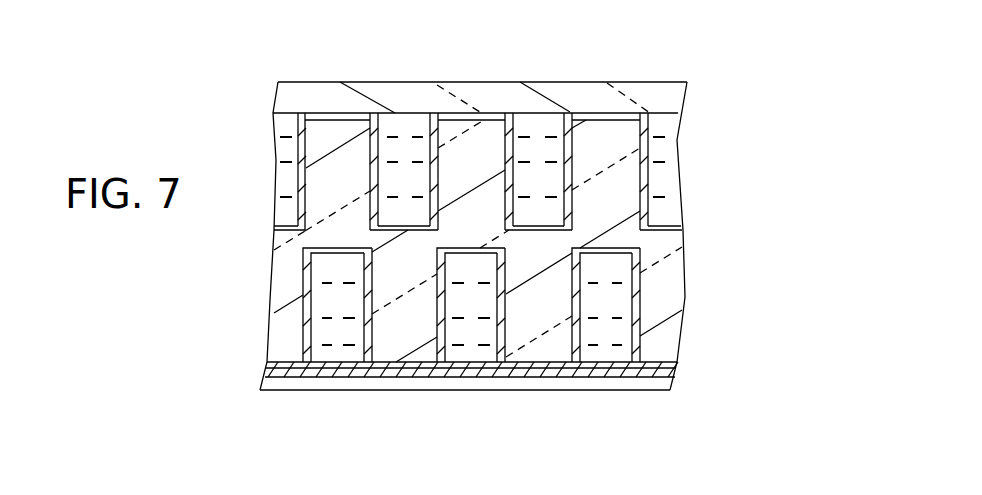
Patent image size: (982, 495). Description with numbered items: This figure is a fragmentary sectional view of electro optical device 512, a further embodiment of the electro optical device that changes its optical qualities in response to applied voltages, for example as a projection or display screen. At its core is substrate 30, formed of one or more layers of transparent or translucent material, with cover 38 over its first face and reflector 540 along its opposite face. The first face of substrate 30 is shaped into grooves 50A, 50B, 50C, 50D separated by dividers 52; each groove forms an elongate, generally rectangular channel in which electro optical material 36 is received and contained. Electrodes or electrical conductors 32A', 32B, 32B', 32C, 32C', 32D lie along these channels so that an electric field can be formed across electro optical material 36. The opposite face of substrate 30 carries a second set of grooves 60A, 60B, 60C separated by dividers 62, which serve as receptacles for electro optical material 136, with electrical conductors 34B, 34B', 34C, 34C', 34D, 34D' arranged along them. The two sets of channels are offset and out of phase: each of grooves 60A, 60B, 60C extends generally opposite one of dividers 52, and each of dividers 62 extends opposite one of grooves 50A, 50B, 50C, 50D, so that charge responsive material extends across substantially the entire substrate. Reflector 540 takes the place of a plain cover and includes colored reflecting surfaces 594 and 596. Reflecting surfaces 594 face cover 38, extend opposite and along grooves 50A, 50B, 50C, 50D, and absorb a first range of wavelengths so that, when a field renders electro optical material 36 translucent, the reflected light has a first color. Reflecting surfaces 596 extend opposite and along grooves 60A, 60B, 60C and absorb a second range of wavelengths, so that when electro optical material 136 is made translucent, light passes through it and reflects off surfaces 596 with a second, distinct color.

The electro optical device 512 is at (716, 120).
The cover 38 is at (323, 95).
The dividers 52 is at (462, 148).
The conductor 32A' is at (267, 135).
The conductor 32B is at (368, 135).
The conductor 32B' is at (443, 135).
The conductor 32C is at (502, 139).
The conductor 32C' is at (566, 139).
The conductor 32D is at (646, 134).
The groove 50A is at (280, 145).
The groove 50B is at (403, 145).
The groove 50C is at (537, 145).
The groove 50D is at (670, 133).
The electro optical material 36 is at (385, 178).
The substrate 30 is at (298, 240).
The electro optical material 136 is at (315, 306).
The conductor 34B is at (306, 340).
The conductor 34B' is at (365, 338).
The conductor 34C is at (456, 363).
The conductor 34C' is at (513, 363).
The conductor 34D is at (636, 345).
The conductor 34D' is at (701, 305).
The groove 60A is at (325, 292).
The groove 60B is at (480, 270).
The groove 60C is at (612, 302).
The dividers 62 is at (562, 362).
The colored reflecting surfaces 594 is at (270, 368).
The colored reflecting surfaces 596 is at (333, 370).
The reflector 540 is at (673, 387).